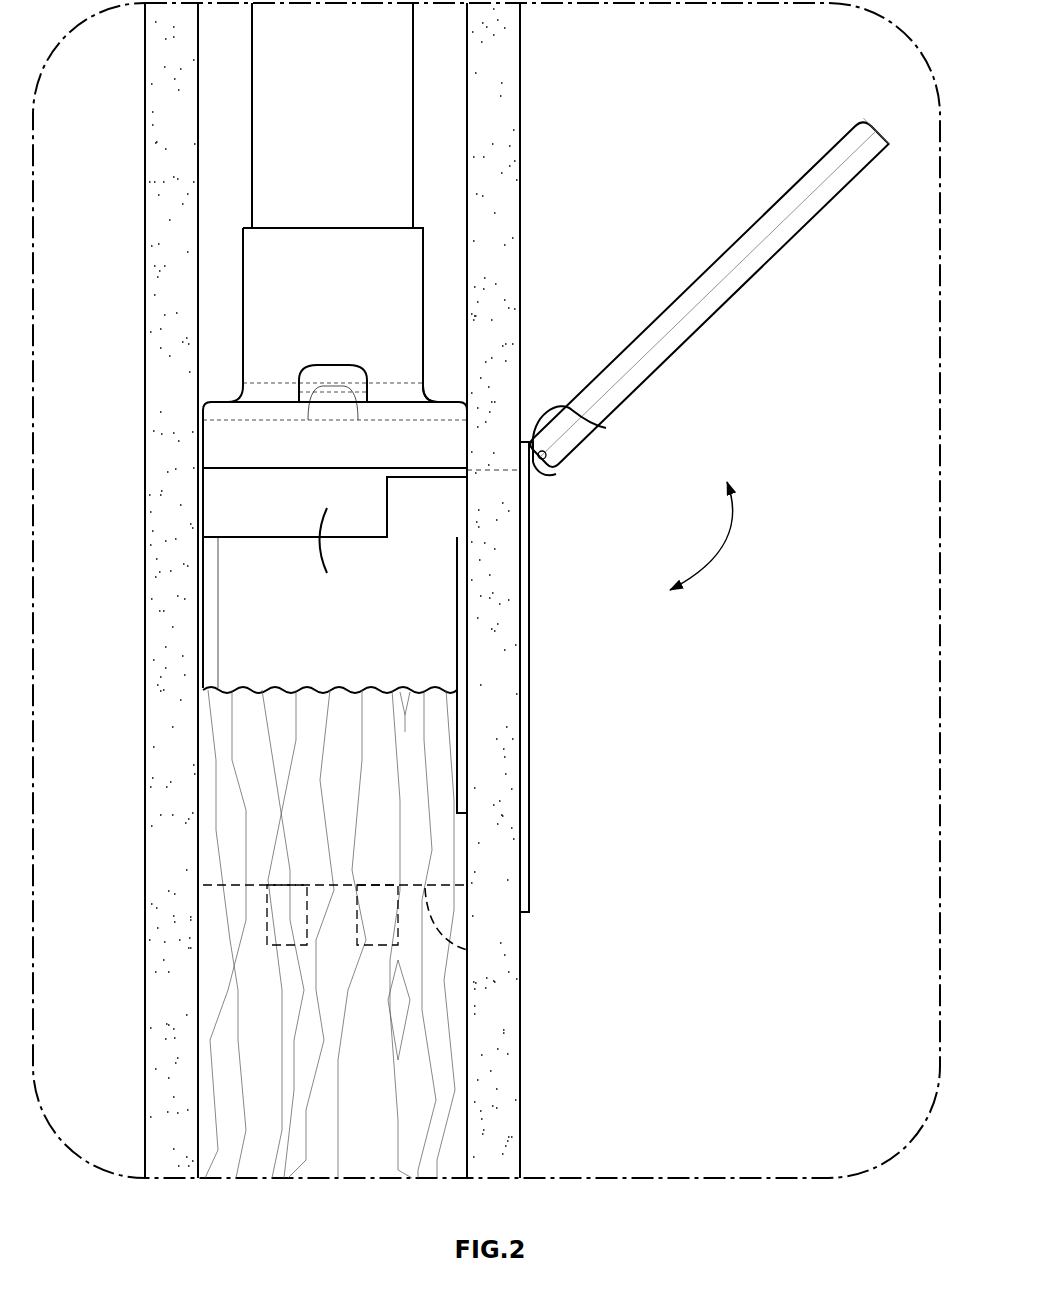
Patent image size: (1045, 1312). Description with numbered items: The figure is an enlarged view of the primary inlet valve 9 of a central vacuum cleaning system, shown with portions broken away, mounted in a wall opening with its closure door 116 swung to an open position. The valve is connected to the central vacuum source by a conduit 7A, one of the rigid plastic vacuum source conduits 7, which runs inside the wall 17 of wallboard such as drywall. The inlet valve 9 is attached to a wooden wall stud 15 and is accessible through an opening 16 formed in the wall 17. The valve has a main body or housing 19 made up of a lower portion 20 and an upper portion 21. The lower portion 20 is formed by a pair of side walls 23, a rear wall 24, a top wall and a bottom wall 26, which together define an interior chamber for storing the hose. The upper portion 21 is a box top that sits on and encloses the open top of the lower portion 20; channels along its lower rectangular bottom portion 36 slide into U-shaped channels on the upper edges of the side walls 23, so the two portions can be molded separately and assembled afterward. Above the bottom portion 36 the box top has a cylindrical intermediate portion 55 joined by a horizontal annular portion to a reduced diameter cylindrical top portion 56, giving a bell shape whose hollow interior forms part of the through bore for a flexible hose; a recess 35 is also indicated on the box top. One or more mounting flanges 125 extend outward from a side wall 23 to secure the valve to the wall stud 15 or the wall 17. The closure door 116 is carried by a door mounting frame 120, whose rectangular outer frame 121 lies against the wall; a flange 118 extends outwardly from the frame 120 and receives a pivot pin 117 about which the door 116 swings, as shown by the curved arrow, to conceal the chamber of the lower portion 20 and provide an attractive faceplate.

The vacuum source conduit 7 is at (437, 115).
The conduit 7A is at (414, 153).
The wall 17 is at (511, 218).
The upper portion 21 is at (412, 285).
The top portion 56 is at (265, 300).
The primary inlet valve 9 is at (432, 345).
The housing 19 is at (428, 392).
The intermediate portion 55 is at (225, 445).
The bottom portion 36 is at (235, 503).
The recess 35 is at (323, 555).
The rear wall 24 is at (195, 585).
The lower portion 20 is at (250, 628).
The side walls 23 is at (422, 655).
The mounting flange 125 is at (460, 713).
The door mounting frame 120 is at (533, 538).
The outer frame 121 is at (529, 572).
The closure door 116 is at (720, 320).
The flange 118 is at (606, 428).
The pivot pin 117 is at (548, 458).
The opening 16 is at (490, 884).
The bottom wall 26 is at (467, 950).
The wall stud 15 is at (417, 1032).